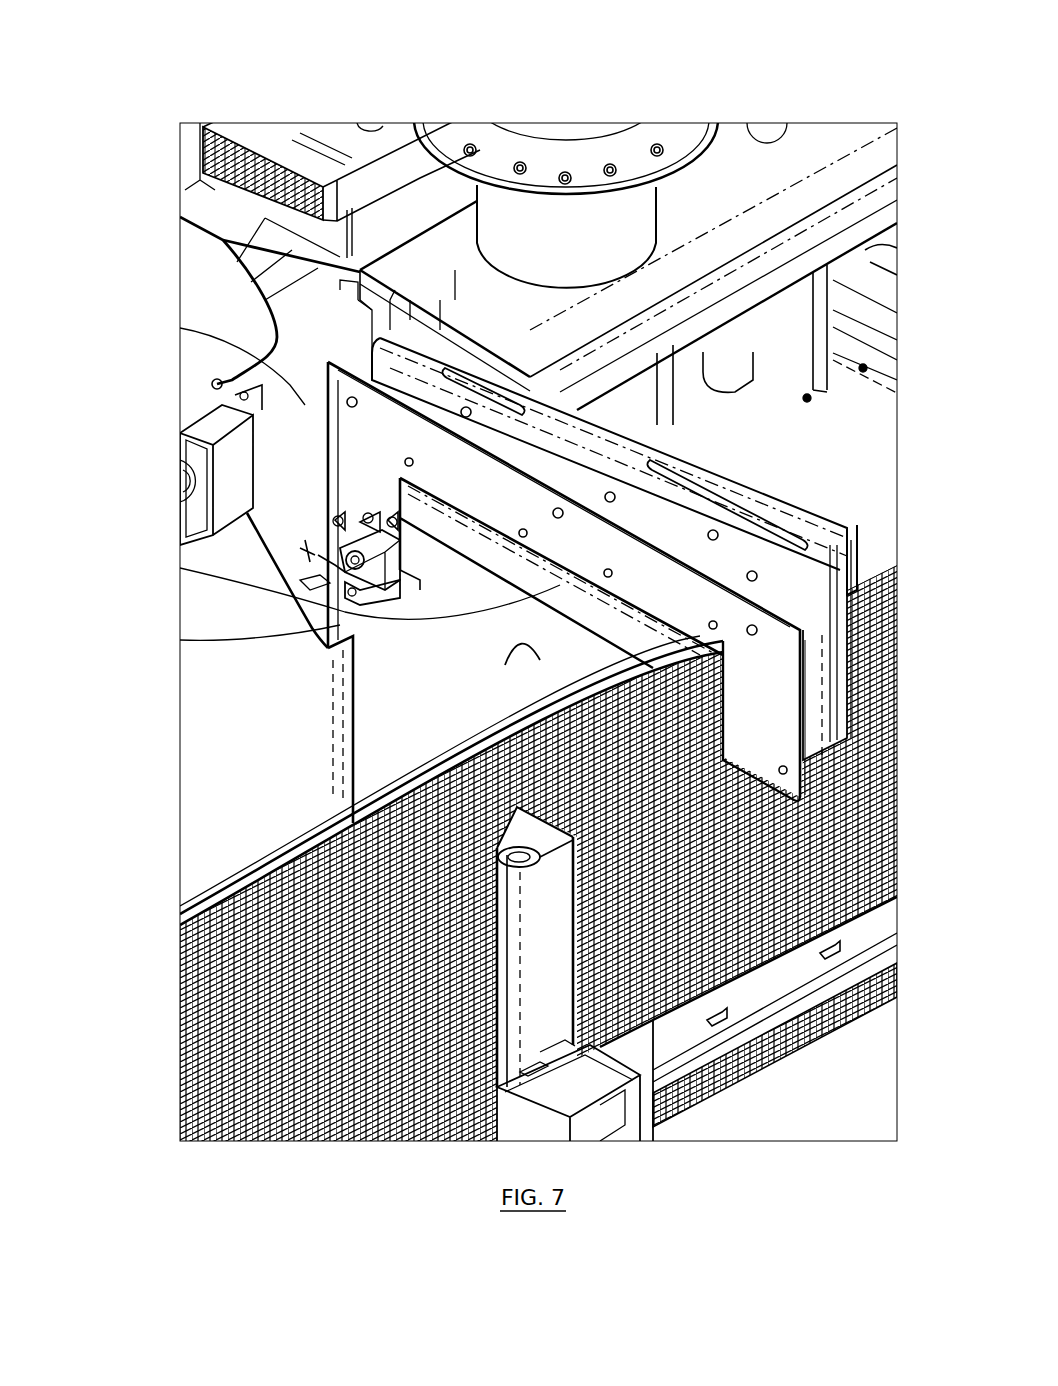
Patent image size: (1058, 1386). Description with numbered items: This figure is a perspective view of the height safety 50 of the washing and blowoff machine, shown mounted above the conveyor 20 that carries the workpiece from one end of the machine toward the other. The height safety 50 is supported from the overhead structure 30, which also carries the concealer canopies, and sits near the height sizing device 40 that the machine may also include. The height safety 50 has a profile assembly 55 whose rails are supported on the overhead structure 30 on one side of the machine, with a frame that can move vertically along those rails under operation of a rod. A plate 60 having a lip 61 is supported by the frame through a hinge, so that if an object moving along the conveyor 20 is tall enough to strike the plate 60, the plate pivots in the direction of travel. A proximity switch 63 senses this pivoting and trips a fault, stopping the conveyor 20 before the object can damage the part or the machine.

The conveyor 20 is at (343, 1120).
The overhead structure 30 is at (410, 265).
The height sizing device 40 is at (607, 1043).
The height safety 50 is at (333, 458).
The profile assembly 55 is at (330, 634).
The plate 60 is at (487, 523).
The lip 61 is at (547, 610).
The proximity switch 63 is at (322, 578).